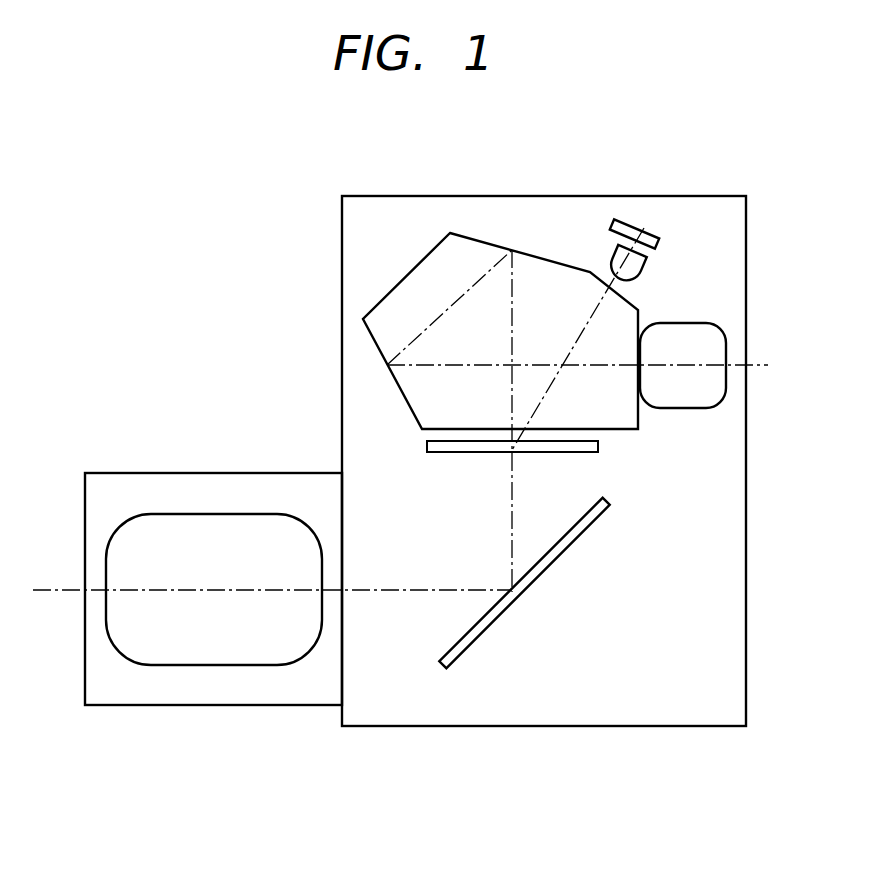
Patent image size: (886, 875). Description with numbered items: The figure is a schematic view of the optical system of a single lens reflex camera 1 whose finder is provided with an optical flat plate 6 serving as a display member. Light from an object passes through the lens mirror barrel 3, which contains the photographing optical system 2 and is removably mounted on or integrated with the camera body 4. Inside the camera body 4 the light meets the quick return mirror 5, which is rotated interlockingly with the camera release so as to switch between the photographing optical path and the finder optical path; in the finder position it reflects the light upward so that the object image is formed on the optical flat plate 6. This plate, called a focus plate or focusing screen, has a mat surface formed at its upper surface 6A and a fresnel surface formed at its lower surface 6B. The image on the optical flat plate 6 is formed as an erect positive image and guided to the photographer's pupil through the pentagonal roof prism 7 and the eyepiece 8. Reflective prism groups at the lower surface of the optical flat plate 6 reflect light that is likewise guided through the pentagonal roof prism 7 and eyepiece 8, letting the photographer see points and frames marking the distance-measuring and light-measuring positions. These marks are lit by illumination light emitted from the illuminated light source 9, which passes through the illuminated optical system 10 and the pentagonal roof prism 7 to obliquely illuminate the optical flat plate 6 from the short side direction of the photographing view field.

The imaging apparatus 1 is at (177, 208).
The photographing optical system 2 is at (225, 514).
The lens mirror barrel 3 is at (165, 473).
The camera body 4 is at (403, 727).
The quick return mirror 5 is at (502, 617).
The optical flat plate 6 is at (598, 446).
The upper surface 6A is at (587, 439).
The lower surface 6B is at (585, 452).
The pentagonal roof prism 7 is at (405, 277).
The eyepiece 8 is at (720, 330).
The illuminated light source 9 is at (642, 240).
The illuminated optical system 10 is at (612, 256).